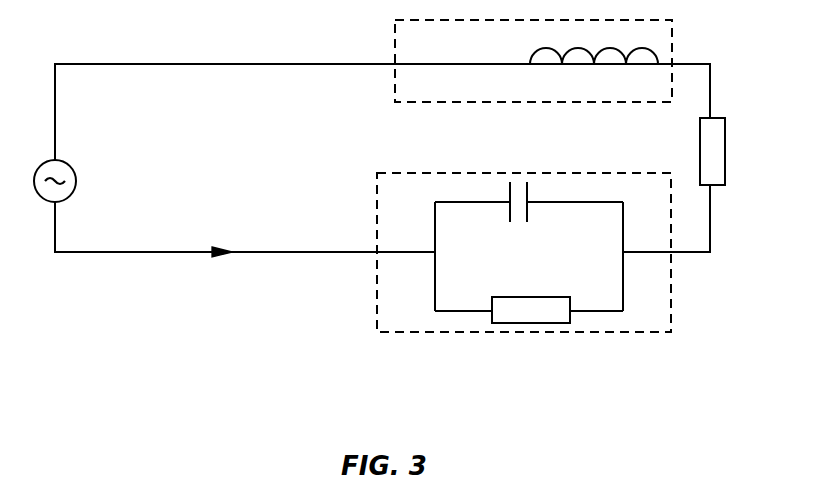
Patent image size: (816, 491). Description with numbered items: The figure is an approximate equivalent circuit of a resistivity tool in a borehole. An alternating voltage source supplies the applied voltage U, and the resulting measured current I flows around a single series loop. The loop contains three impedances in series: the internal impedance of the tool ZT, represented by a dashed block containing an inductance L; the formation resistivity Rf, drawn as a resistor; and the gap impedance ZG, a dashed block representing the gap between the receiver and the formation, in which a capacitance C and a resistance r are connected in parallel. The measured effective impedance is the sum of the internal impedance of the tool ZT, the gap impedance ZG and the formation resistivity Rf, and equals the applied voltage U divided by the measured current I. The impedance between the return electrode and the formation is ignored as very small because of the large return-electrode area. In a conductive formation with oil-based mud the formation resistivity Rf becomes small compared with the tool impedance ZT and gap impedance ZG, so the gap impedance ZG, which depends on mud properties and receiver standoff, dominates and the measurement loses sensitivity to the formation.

The applied voltage U is at (40, 181).
The measured current I is at (227, 240).
The internal impedance of the tool ZT is at (533, 61).
The inductance L is at (594, 41).
The formation resistivity Rf is at (729, 151).
The gap impedance ZG is at (524, 252).
The capacitance C is at (529, 214).
The resistance r is at (529, 294).